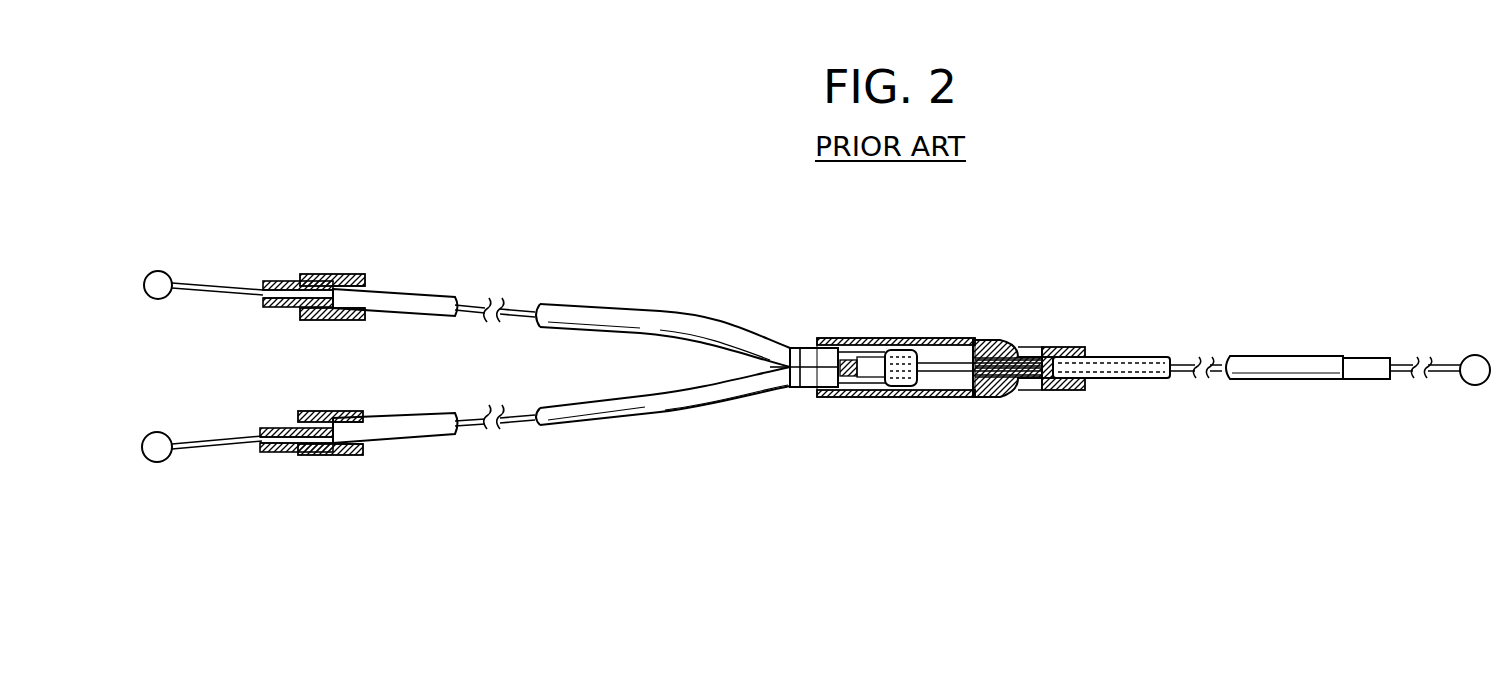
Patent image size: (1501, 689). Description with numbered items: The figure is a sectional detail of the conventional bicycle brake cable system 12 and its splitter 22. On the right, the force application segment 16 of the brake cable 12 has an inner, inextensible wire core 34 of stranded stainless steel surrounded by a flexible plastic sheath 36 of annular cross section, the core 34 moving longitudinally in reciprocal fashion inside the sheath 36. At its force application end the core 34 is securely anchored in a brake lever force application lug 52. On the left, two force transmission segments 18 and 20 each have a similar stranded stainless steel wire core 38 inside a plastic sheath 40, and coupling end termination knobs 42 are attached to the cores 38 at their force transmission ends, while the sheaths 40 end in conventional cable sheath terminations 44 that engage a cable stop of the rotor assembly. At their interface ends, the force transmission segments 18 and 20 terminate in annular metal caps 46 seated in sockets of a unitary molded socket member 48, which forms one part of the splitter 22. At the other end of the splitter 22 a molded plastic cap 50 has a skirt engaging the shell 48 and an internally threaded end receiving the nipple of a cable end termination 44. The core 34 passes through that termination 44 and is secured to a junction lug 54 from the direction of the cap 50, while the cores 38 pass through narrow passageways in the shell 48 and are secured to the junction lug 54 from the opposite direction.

The brake cable system 12 is at (960, 476).
The force application segment 16 is at (1265, 356).
The force transmission segment 18 is at (566, 308).
The force transmission segment 20 is at (577, 425).
The splitter 22 is at (924, 330).
The wire core 34 is at (1400, 373).
The sheath 36 is at (1285, 380).
The wire core 38 is at (513, 426).
The sheath 40 is at (662, 414).
The coupling end termination knob 42 is at (167, 275).
The cable sheath termination 44 is at (338, 274).
The metal cap 46 is at (800, 348).
The socket member 48 is at (853, 338).
The cap 50 is at (1000, 345).
The brake lever force application lug 52 is at (1472, 355).
The junction lug 54 is at (900, 388).